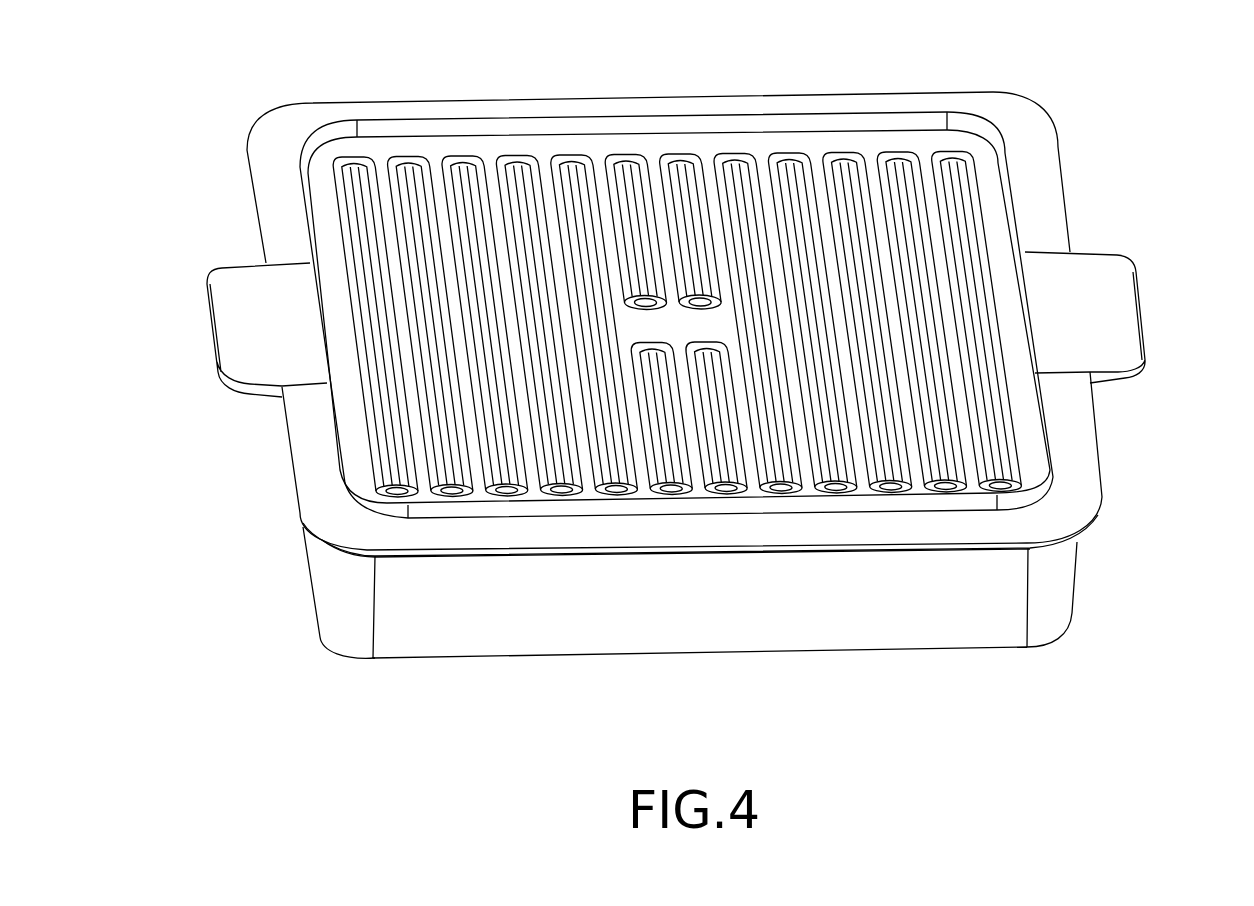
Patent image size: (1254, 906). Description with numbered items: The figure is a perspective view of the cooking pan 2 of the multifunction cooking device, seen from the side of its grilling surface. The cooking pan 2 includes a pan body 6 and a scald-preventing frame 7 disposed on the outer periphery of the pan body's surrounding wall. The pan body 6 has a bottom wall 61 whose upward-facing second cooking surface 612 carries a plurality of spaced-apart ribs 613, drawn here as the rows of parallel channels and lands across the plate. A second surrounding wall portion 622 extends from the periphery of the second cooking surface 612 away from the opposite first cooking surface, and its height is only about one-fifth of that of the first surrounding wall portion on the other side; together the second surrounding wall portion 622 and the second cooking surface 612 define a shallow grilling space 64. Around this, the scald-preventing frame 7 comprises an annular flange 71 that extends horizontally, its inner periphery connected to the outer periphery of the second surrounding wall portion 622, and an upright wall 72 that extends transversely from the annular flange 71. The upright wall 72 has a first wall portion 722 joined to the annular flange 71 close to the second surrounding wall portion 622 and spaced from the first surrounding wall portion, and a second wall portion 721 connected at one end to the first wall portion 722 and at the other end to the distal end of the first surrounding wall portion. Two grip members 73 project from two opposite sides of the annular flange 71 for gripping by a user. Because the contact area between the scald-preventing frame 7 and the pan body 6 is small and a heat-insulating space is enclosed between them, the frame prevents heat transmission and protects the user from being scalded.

The cooking pan 2 is at (626, 78).
The pan body 6 is at (807, 158).
The bottom wall 61 is at (897, 157).
The second cooking surface 612 is at (950, 195).
The ribs 613 is at (727, 473).
The grilling space 64 is at (544, 152).
The second surrounding wall portion 622 is at (473, 507).
The scald-preventing frame 7 is at (920, 627).
The annular flange 71 is at (1072, 430).
The upright wall 72 is at (1013, 588).
The second wall portion 721 is at (597, 632).
The first wall portion 722 is at (552, 560).
The grip members 73 is at (235, 322).